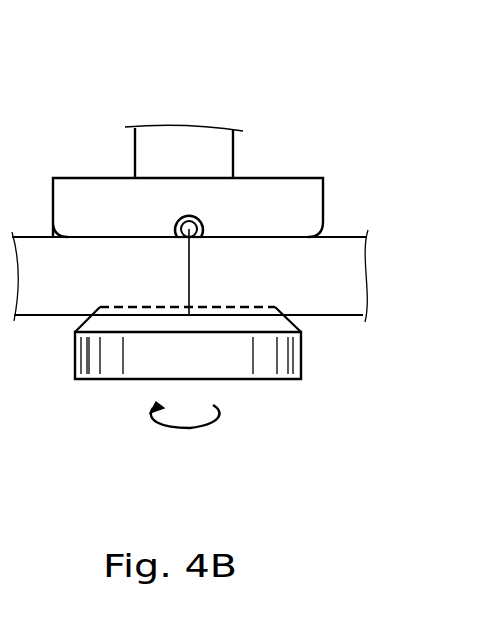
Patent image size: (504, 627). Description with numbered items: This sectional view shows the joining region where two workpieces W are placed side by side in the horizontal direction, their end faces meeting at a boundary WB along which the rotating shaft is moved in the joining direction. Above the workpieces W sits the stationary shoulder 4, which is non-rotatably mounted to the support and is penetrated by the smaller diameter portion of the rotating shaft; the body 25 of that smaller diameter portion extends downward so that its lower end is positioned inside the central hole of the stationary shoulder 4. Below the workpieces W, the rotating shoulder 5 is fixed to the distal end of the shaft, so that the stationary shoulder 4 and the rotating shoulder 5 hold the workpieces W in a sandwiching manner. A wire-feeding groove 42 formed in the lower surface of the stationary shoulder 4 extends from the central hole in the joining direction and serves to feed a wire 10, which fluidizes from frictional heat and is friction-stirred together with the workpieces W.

The stationary shoulder 4 is at (109, 208).
The body 25 is at (157, 153).
The wire-feeding groove 42 is at (175, 208).
The wire 10 is at (193, 208).
The rotating shoulder 5 is at (208, 355).
The workpieces W is at (41, 272).
The boundary WB is at (186, 268).